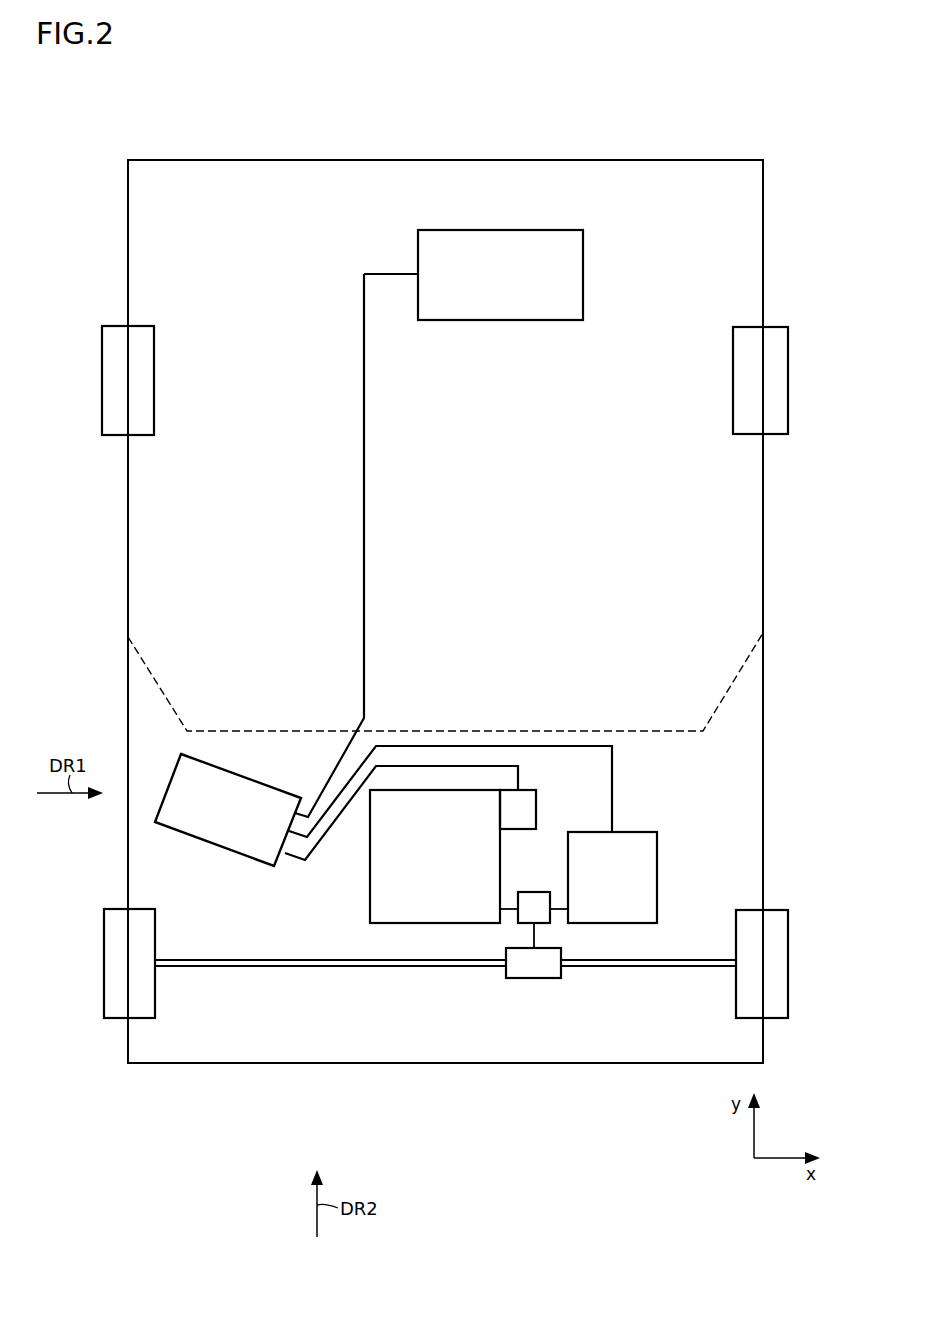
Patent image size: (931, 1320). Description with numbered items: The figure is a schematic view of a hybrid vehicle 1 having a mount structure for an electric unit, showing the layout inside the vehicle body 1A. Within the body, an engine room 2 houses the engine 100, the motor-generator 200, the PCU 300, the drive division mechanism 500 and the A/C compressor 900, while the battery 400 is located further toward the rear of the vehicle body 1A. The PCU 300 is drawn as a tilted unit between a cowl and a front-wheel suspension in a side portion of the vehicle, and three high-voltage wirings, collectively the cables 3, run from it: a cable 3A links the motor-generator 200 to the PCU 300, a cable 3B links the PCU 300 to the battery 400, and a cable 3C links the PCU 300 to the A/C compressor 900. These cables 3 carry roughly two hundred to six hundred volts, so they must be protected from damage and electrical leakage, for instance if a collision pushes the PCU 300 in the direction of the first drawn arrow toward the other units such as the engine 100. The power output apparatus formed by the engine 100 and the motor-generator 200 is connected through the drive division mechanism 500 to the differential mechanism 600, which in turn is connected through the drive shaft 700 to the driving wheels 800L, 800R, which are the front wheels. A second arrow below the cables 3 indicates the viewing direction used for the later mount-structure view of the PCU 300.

The hybrid vehicle 1 is at (157, 133).
The vehicle body 1A is at (128, 852).
The engine room 2 is at (768, 857).
The cables 3 is at (436, 710).
The cable 3A is at (343, 808).
The cable 3B is at (365, 682).
The cable 3C is at (331, 803).
The engine 100 is at (412, 923).
The motor-generator 200 is at (608, 923).
The PCU 300 is at (227, 849).
The battery 400 is at (583, 274).
The drive division mechanism 500 is at (517, 917).
The differential mechanism 600 is at (533, 978).
The drive shaft 700 is at (180, 968).
The driving wheel 800R is at (104, 965).
The driving wheel 800L is at (788, 963).
The A/C compressor 900 is at (536, 810).